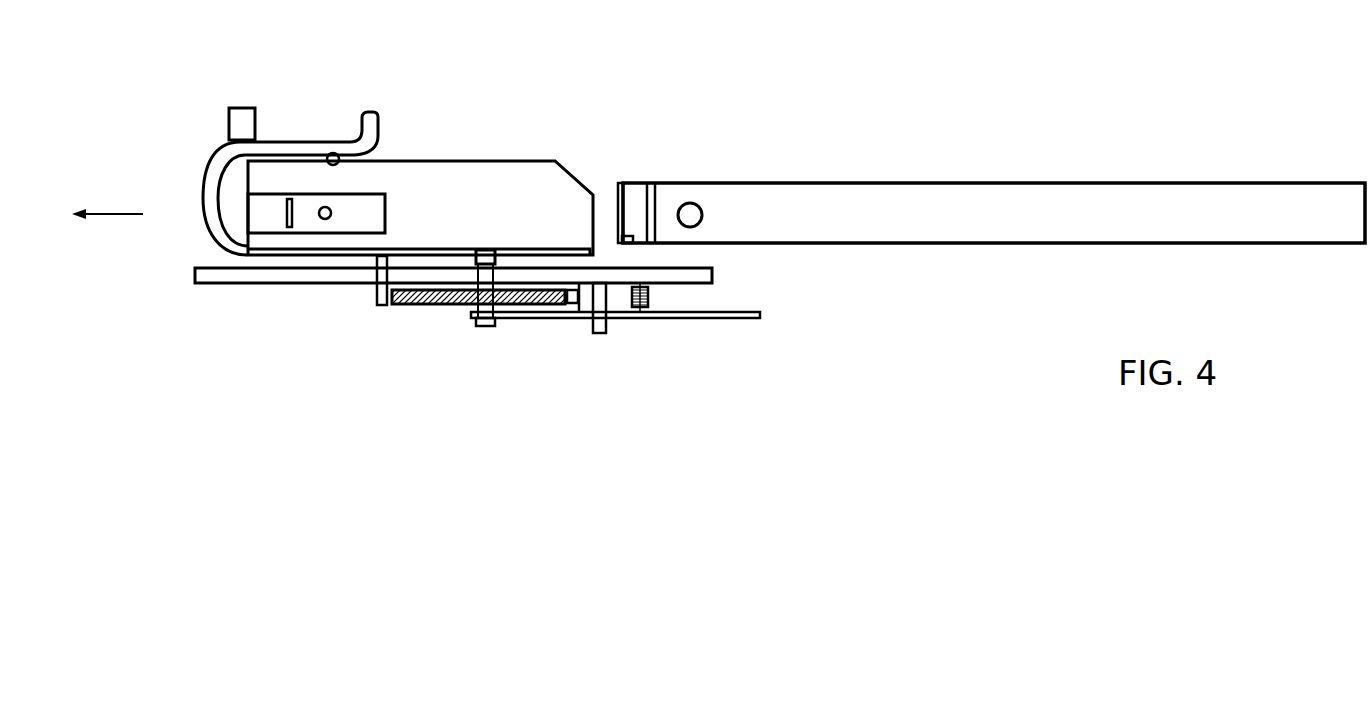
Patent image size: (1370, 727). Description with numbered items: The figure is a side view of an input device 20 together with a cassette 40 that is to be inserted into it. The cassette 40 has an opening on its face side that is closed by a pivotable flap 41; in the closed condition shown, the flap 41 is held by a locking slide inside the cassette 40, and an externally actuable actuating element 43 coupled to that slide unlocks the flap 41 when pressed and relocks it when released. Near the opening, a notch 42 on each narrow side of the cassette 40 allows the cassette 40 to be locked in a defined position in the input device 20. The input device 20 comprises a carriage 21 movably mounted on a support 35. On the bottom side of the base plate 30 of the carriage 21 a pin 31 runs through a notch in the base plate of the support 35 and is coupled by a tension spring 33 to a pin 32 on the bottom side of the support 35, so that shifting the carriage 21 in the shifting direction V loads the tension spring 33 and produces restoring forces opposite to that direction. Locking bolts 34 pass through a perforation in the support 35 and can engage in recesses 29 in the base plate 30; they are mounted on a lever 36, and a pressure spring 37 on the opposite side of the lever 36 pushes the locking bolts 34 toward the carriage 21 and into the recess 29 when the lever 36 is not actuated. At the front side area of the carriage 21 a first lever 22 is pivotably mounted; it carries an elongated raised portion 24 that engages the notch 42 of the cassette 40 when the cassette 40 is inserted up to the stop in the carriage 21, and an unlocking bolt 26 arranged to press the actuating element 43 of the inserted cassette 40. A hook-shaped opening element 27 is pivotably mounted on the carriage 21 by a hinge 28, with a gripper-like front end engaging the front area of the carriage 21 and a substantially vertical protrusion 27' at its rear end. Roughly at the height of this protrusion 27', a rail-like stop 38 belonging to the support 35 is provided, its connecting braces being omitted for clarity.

The input device 20 is at (120, 156).
The carriage 21 is at (455, 167).
The first lever 22 is at (385, 213).
The elongated raised portion 24 is at (292, 210).
The unlocking bolt 26 is at (336, 209).
The hook-shaped opening element 27 is at (259, 190).
The vertically running protrusion 27' is at (355, 105).
The hinge 28 is at (330, 152).
The recess 29 is at (484, 248).
The base plate 30 is at (300, 250).
The pin 31 is at (375, 303).
The pin 32 is at (573, 303).
The tension spring 33 is at (413, 304).
The locking bolt 34 is at (483, 325).
The support 35 is at (195, 272).
The lever 36 is at (667, 318).
The pressure spring 37 is at (650, 297).
The rail-like stop 38 is at (242, 113).
The cassette 40 is at (1178, 198).
The pivotable flap 41 is at (617, 187).
The notch 42 is at (652, 185).
The actuating element 43 is at (691, 217).